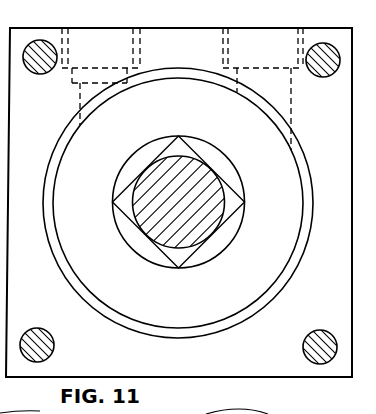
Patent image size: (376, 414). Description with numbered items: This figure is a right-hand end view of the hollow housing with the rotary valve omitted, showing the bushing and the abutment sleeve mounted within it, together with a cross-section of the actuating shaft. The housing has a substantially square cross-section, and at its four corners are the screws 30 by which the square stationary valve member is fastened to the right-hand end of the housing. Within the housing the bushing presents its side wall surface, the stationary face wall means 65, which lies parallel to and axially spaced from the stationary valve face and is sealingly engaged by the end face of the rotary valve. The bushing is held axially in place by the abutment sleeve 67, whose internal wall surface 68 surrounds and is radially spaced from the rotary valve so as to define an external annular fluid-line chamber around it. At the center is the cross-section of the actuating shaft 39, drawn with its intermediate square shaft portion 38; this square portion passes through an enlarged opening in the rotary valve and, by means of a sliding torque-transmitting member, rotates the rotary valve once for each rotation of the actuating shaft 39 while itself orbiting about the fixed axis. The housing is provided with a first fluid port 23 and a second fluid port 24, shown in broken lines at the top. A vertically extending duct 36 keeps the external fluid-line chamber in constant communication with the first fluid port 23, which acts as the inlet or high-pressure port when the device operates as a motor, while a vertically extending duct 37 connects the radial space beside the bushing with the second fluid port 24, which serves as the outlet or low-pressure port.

The first fluid port 23 is at (230, 50).
The second fluid port 24 is at (133, 48).
The screws 30 is at (32, 360).
The vertically extending duct 36 is at (291, 101).
The vertically extending duct 37 is at (80, 99).
The intermediate square shaft portion 38 is at (232, 198).
The actuating shaft 39 is at (185, 205).
The stationary face wall means 65 is at (206, 298).
The abutment sleeve 67 is at (306, 173).
The internal wall surface 68 is at (300, 226).